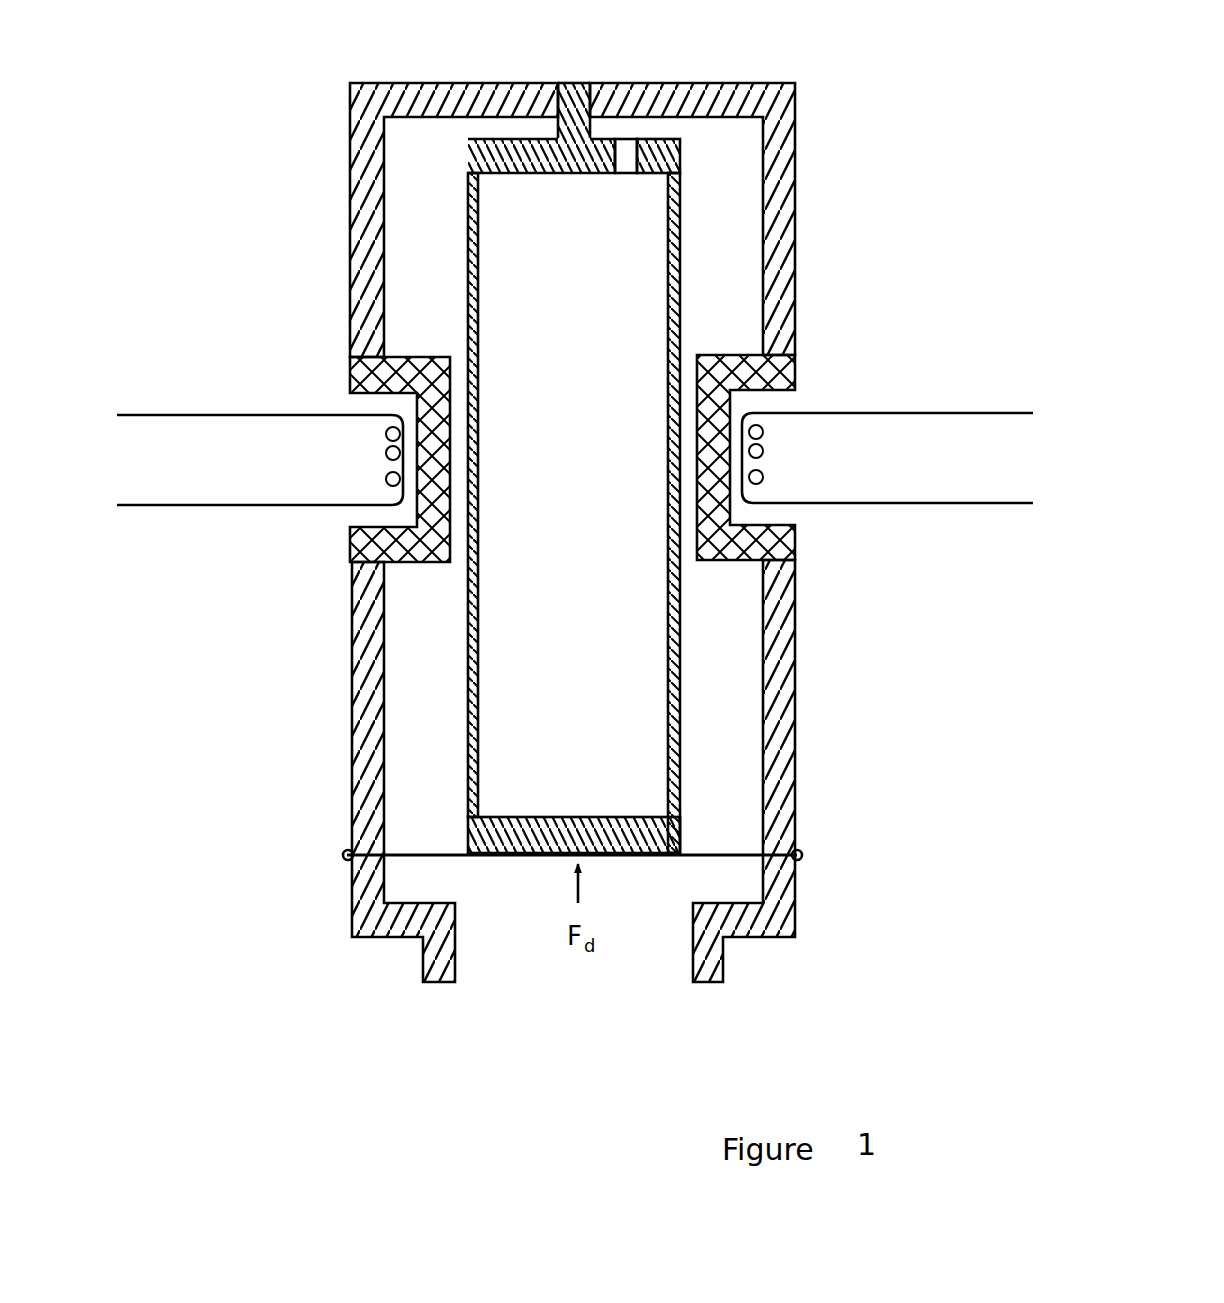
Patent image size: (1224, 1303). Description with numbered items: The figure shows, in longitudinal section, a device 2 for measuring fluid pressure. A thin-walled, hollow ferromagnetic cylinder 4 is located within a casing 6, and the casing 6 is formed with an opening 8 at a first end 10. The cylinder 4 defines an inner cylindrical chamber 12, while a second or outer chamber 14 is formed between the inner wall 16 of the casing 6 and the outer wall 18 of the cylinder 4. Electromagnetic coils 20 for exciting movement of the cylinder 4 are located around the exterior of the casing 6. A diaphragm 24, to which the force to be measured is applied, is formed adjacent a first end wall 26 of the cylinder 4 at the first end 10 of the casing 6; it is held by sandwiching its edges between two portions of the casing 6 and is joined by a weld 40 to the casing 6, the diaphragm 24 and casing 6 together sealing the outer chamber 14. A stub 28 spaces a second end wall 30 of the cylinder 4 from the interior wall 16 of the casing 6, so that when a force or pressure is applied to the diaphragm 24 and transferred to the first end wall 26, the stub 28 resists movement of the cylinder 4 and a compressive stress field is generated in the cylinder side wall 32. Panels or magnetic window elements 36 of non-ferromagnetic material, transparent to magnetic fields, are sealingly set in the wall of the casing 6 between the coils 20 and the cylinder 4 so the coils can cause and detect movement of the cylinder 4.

The device for measuring fluid pressure 2 is at (355, 1032).
The ferromagnetic cylinder 4 is at (680, 690).
The casing 6 is at (795, 610).
The opening 8 is at (652, 956).
The first end 10 is at (859, 923).
The inner cylindrical chamber 12 is at (535, 688).
The second or outer chamber 14 is at (737, 310).
The inner wall of the casing 16 is at (766, 212).
The outer wall of the cylinder 18 is at (689, 184).
The electromagnetic coils 20 is at (186, 521).
The diaphragm 24 is at (578, 855).
The first end wall of the cylinder 26 is at (647, 833).
The stub 28 is at (566, 128).
The second end wall of the cylinder 30 is at (468, 152).
The cylinder side wall 32 is at (468, 277).
The panels or magnetic window elements 36 is at (352, 537).
The weld 40 is at (343, 857).